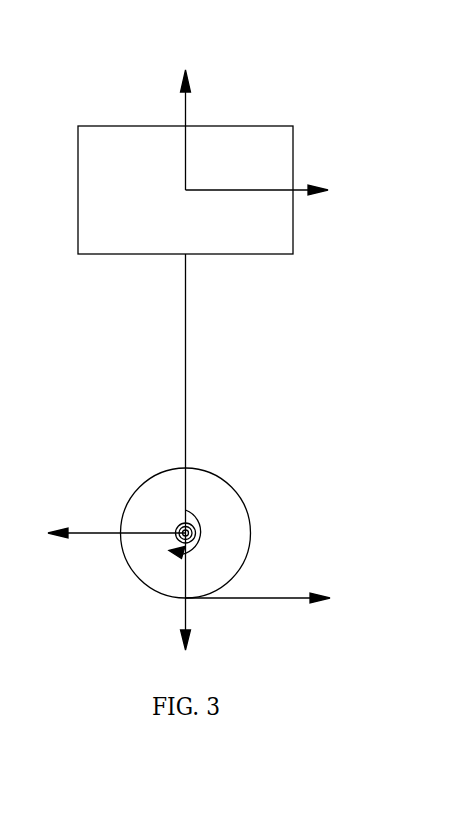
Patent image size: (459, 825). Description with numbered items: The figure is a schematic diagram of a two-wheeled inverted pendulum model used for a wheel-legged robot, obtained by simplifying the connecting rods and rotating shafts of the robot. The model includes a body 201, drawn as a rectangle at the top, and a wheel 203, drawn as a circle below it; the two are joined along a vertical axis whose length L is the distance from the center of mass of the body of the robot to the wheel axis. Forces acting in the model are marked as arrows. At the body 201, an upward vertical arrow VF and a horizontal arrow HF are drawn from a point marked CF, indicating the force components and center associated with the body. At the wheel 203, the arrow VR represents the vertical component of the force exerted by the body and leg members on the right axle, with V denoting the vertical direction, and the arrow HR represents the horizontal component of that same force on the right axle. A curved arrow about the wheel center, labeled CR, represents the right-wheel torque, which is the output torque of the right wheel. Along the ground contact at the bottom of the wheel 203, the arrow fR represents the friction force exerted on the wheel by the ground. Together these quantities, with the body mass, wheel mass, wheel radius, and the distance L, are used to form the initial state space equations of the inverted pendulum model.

The body 201 is at (219, 134).
The wheels 203 is at (238, 493).
The front vertical force VF is at (160, 123).
The front horizontal force HF is at (267, 172).
The front body center CF is at (249, 232).
The distance from the center of mass of the body to the wheel axis L is at (202, 393).
The vertical component of the force on the right axle VR is at (159, 595).
The right-wheel torque CR is at (209, 534).
The horizontal component of the force on the right axle HR is at (114, 559).
The friction force on the wheel from the ground fR is at (258, 573).